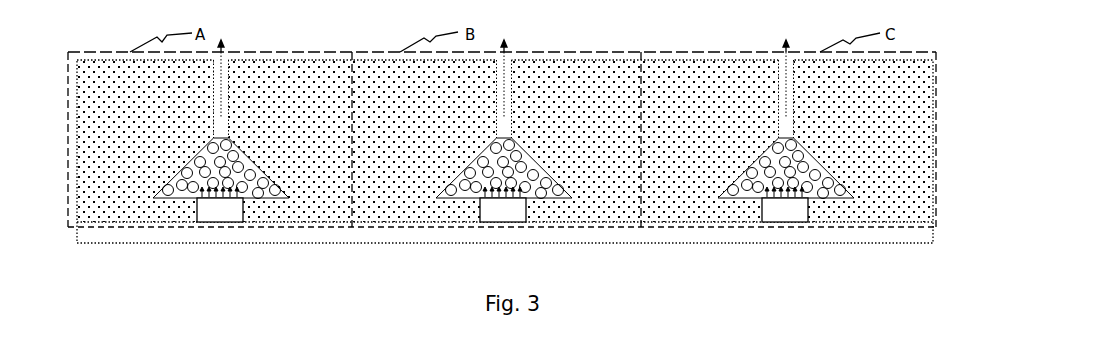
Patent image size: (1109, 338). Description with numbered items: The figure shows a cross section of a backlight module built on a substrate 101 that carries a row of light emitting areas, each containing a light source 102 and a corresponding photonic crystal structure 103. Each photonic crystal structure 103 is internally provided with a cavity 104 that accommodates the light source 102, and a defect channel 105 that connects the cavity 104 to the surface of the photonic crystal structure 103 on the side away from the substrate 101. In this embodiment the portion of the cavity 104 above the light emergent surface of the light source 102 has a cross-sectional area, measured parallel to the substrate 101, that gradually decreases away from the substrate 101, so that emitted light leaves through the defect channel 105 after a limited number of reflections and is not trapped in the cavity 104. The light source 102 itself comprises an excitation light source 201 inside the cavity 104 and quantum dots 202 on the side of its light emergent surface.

The substrate 101 is at (908, 235).
The light source 102 is at (502, 248).
The photonic crystal structure 103 is at (593, 53).
The cavity 104 is at (537, 158).
The defect channel 105 is at (512, 57).
The excitation light source 201 is at (507, 213).
The quantum dots 202 is at (576, 268).